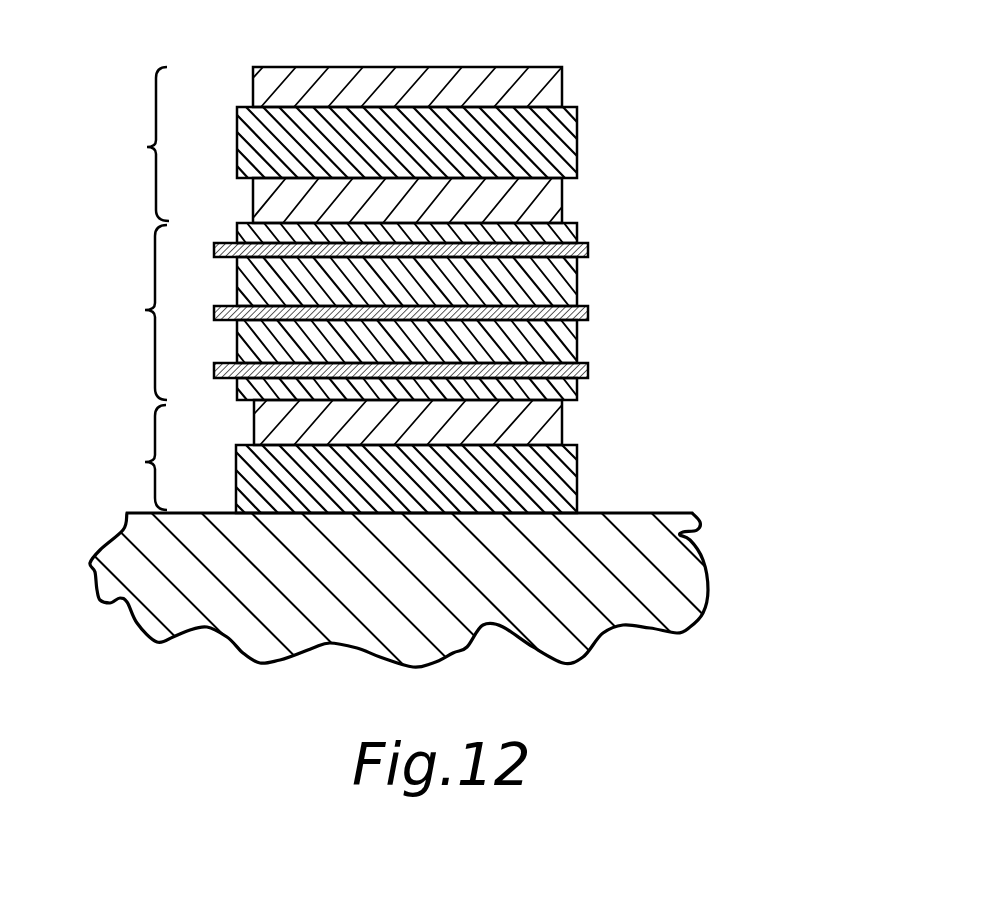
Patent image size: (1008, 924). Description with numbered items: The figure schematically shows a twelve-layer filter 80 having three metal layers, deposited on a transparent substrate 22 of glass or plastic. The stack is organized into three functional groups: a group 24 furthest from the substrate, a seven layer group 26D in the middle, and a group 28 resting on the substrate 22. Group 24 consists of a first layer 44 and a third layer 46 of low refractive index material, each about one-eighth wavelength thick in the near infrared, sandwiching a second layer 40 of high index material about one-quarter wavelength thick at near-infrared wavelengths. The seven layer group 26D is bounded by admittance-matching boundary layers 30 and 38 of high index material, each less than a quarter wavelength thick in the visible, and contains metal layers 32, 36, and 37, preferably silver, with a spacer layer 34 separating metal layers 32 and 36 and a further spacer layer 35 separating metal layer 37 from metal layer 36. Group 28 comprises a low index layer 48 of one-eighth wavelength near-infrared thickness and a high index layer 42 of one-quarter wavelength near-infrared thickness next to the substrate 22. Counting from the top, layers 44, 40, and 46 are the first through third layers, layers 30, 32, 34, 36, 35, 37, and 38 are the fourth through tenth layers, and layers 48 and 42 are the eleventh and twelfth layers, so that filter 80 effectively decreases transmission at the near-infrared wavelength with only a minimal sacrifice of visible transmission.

The substrate 22 is at (714, 568).
The functional group 24 is at (145, 147).
The seven layer group 26D is at (143, 310).
The functional group 28 is at (143, 462).
The boundary layer 30 is at (582, 233).
The metal layer 32 is at (591, 250).
The spacer layer 34 is at (582, 280).
The spacer layer 35 is at (582, 332).
The metal layer 36 is at (593, 313).
The metal layer 37 is at (593, 371).
The boundary layer 38 is at (582, 390).
The second layer 40 is at (582, 138).
The twelfth layer 42 is at (582, 477).
The first layer 44 is at (567, 88).
The third layer 46 is at (567, 200).
The eleventh layer 48 is at (567, 424).
The twelve layer filter 80 is at (758, 222).